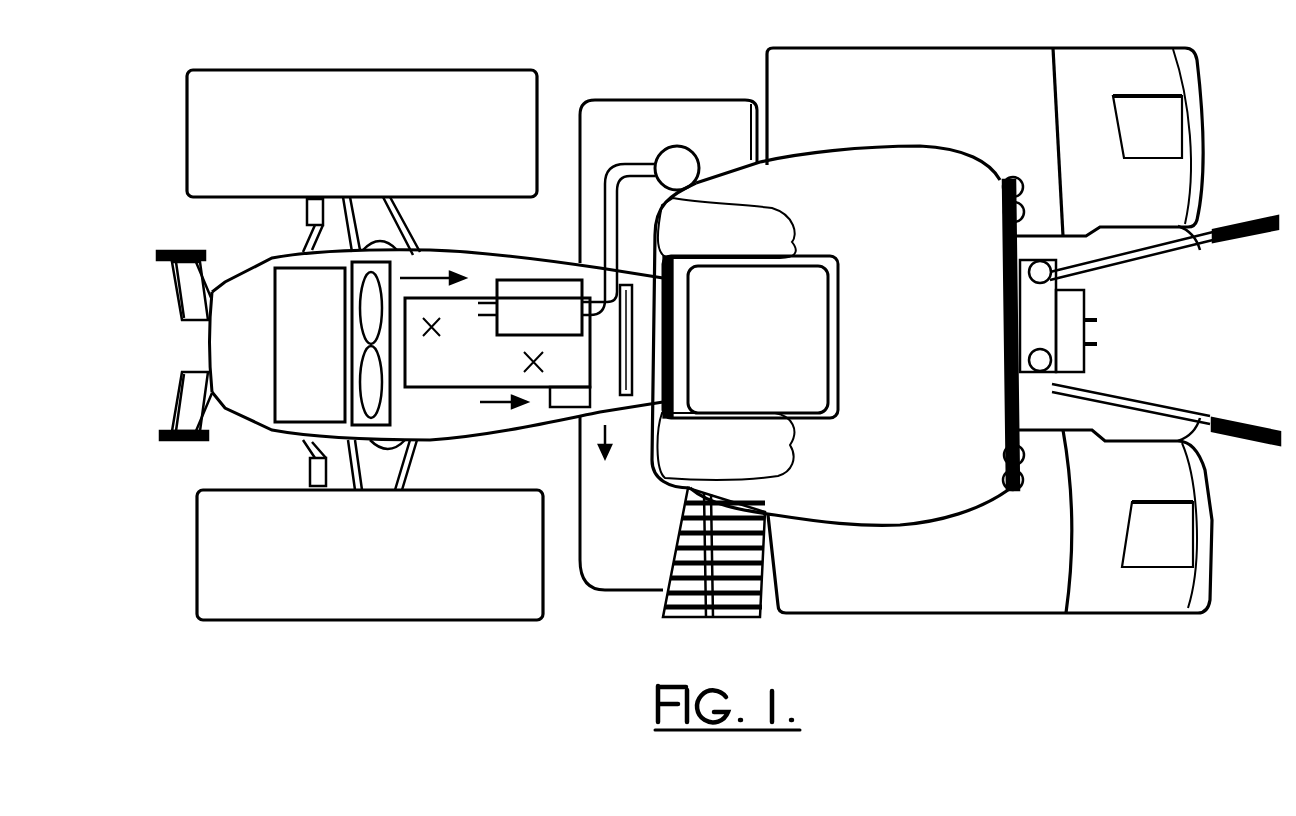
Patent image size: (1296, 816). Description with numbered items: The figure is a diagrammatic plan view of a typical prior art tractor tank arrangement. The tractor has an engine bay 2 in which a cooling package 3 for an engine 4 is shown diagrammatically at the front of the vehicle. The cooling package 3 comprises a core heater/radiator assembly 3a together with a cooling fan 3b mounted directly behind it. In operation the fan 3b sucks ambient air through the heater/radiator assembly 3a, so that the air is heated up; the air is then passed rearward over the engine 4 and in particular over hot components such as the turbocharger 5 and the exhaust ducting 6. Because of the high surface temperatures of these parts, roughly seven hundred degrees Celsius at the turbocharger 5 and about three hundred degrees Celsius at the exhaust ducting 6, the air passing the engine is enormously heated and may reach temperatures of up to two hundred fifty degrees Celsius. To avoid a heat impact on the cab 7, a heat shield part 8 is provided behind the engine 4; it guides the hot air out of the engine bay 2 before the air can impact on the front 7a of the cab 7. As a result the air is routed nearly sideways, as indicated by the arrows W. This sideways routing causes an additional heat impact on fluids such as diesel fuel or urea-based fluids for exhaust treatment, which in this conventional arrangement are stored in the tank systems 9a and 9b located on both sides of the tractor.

The engine bay 2 is at (432, 262).
The cooling package 3 is at (311, 311).
The core heater/radiator assembly 3a is at (338, 338).
The cooling fan 3b is at (392, 404).
The engine 4 is at (490, 362).
The turbocharger 5 is at (571, 387).
The exhaust ducting 6 is at (545, 280).
The cab 7 is at (856, 178).
The front of the cab 7a is at (650, 310).
The heat shield part 8 is at (640, 347).
The tank system 9a is at (622, 568).
The tank system 9b is at (640, 128).
The arrows W is at (590, 255).